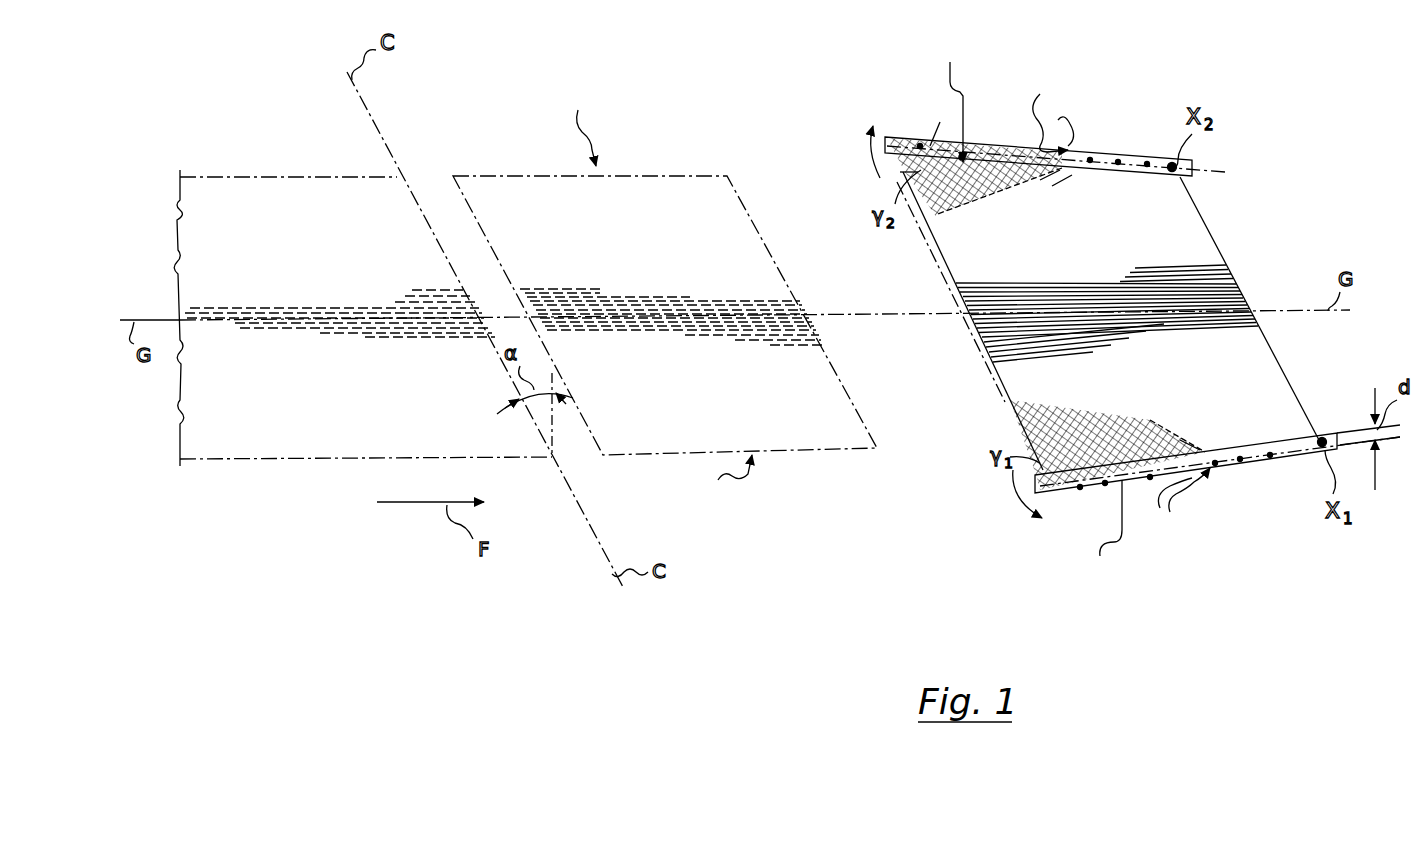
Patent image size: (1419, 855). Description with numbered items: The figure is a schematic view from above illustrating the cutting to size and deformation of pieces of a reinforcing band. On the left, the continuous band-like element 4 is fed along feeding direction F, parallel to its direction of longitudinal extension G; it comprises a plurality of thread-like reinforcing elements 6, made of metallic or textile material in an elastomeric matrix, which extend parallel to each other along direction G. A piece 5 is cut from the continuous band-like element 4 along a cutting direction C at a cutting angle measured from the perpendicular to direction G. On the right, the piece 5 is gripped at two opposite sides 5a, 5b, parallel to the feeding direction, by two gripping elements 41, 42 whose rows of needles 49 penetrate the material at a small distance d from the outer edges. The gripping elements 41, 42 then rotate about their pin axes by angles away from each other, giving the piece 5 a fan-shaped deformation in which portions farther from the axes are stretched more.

The continuous band-like element 4 is at (312, 421).
The piece 5 is at (676, 196).
The side of the piece 5a is at (906, 521).
The side of the piece 5b is at (764, 102).
The thread-like reinforcing elements 6 is at (378, 308).
The gripping element 41 is at (1234, 460).
The gripping element 42 is at (1112, 152).
The needles 49 is at (1118, 306).